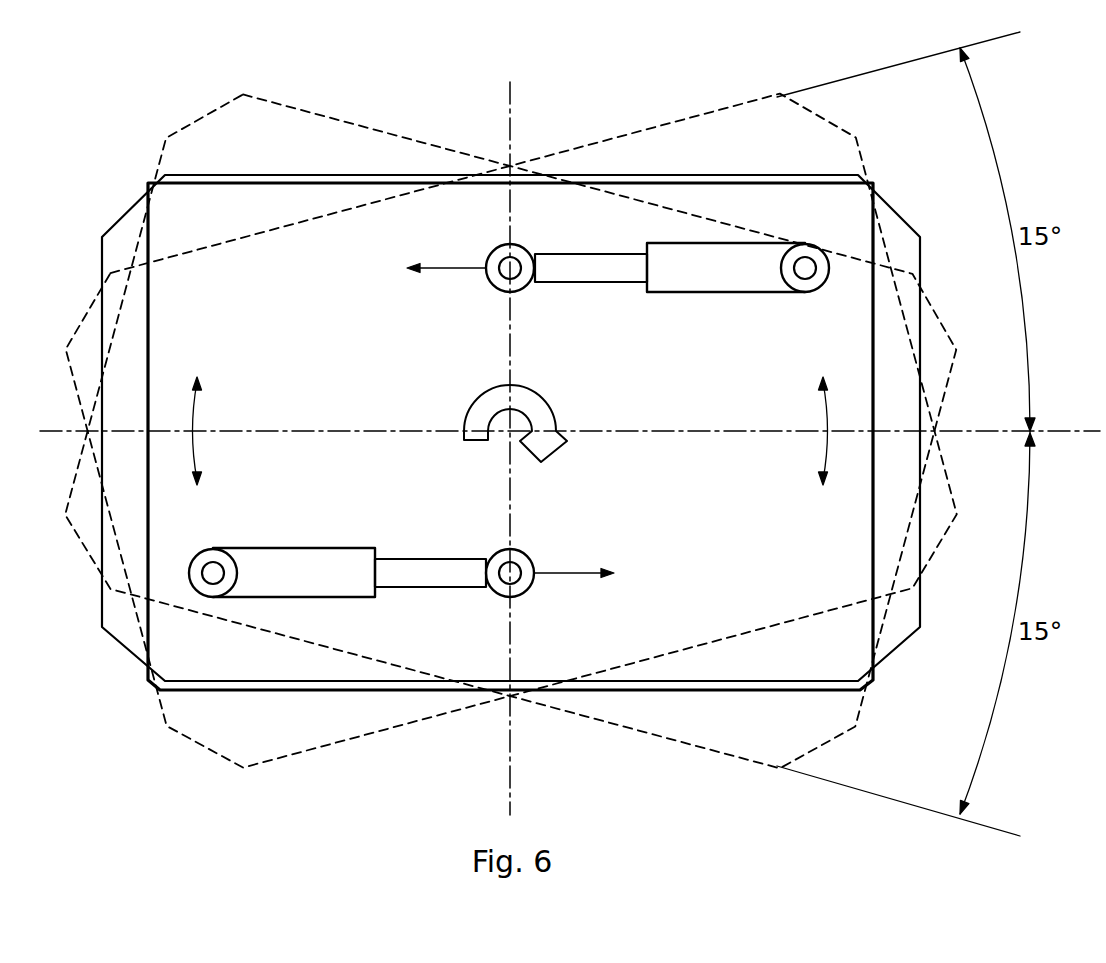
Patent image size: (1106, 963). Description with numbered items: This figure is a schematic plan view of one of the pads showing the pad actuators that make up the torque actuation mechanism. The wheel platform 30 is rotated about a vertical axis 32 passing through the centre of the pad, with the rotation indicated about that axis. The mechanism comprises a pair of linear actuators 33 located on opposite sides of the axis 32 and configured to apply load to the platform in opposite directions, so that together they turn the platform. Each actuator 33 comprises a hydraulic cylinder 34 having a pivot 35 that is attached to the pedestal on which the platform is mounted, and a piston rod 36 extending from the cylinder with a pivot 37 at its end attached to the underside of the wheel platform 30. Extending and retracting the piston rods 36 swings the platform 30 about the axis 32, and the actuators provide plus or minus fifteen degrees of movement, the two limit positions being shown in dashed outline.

The wheel platform 30 is at (140, 200).
The vertical axis 32 is at (511, 438).
The linear actuator 33 is at (559, 390).
The hydraulic cylinder 34 is at (700, 243).
The pivot 35 is at (832, 253).
The piston rod 36 is at (598, 253).
The pivot 37 is at (503, 245).